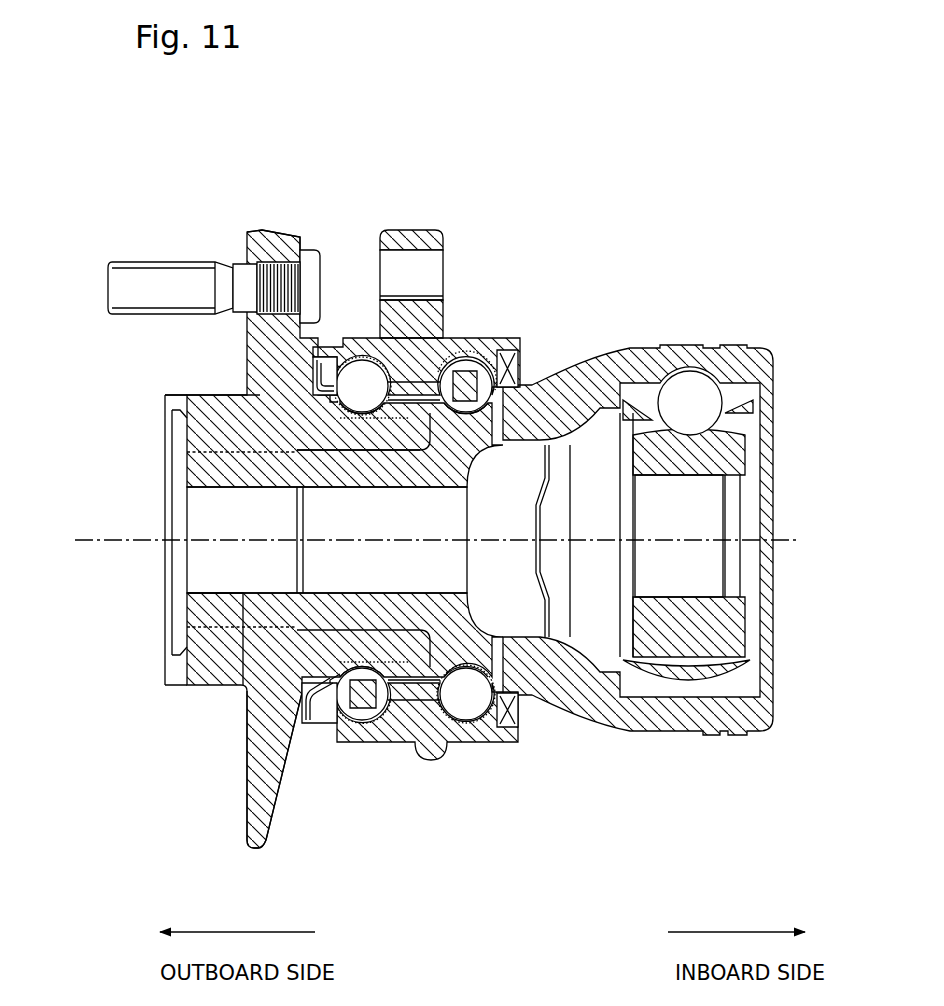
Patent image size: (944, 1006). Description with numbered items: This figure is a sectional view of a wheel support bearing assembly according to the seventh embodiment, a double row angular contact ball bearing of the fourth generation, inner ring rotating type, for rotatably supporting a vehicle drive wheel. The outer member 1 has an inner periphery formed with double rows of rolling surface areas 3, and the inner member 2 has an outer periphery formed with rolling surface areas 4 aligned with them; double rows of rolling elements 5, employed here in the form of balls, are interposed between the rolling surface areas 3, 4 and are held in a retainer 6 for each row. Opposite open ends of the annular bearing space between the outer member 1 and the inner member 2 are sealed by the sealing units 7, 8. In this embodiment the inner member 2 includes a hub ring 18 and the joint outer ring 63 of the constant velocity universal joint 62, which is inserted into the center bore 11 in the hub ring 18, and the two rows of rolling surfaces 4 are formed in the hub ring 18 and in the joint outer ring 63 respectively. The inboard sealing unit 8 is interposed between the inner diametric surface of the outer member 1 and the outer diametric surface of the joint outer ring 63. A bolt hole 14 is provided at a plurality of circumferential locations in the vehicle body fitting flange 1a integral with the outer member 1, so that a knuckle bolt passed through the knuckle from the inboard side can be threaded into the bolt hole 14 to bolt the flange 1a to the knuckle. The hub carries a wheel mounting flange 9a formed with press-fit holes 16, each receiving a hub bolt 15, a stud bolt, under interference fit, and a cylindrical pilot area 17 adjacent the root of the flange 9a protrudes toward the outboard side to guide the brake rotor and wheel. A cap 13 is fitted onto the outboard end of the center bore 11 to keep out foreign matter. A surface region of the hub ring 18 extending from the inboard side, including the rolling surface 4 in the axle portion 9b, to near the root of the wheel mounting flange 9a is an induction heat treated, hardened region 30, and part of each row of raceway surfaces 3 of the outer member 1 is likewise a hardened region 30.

The outer member 1 is at (400, 748).
The vehicle body fitting flange 1a is at (400, 228).
The inner member 2 is at (68, 426).
The rolling surface areas 3 is at (459, 705).
The rolling surface areas 4 is at (537, 692).
The rolling elements 5 is at (460, 706).
The roller retainer 6 is at (428, 680).
The sealing unit 7 is at (316, 370).
The sealing unit 8 is at (523, 363).
The wheel mounting flange 9a is at (282, 232).
The axle portion 9b is at (367, 442).
The center bore 11 is at (238, 612).
The cap 13 is at (162, 505).
The bolt hole 14 is at (393, 267).
The hub bolt 15 is at (160, 262).
The press-fit hole 16 is at (258, 275).
The cylindrical pilot area 17 is at (165, 398).
The hub ring 18 is at (243, 424).
The hardened region 30 is at (297, 452).
The constant velocity universal joint 62 is at (725, 322).
The joint outer ring 63 is at (230, 467).